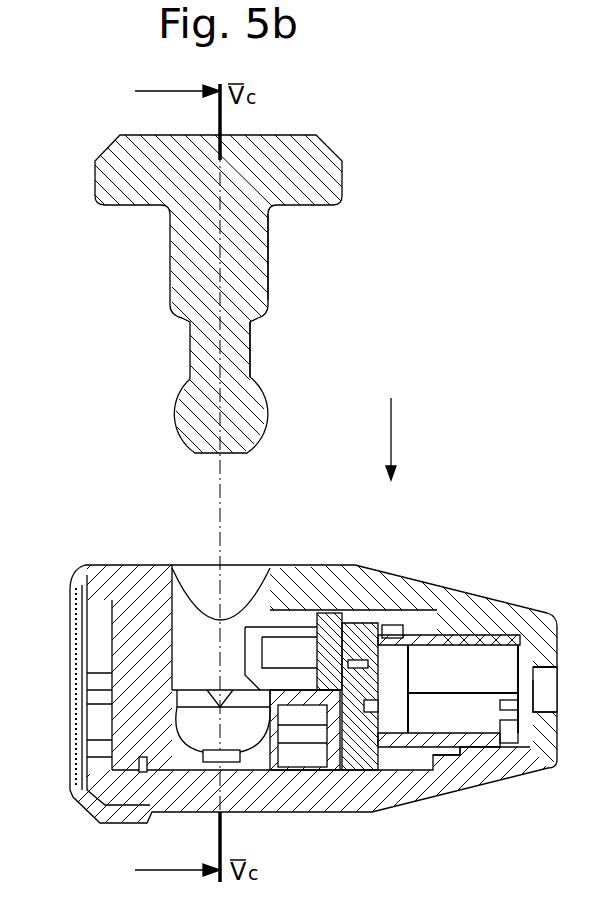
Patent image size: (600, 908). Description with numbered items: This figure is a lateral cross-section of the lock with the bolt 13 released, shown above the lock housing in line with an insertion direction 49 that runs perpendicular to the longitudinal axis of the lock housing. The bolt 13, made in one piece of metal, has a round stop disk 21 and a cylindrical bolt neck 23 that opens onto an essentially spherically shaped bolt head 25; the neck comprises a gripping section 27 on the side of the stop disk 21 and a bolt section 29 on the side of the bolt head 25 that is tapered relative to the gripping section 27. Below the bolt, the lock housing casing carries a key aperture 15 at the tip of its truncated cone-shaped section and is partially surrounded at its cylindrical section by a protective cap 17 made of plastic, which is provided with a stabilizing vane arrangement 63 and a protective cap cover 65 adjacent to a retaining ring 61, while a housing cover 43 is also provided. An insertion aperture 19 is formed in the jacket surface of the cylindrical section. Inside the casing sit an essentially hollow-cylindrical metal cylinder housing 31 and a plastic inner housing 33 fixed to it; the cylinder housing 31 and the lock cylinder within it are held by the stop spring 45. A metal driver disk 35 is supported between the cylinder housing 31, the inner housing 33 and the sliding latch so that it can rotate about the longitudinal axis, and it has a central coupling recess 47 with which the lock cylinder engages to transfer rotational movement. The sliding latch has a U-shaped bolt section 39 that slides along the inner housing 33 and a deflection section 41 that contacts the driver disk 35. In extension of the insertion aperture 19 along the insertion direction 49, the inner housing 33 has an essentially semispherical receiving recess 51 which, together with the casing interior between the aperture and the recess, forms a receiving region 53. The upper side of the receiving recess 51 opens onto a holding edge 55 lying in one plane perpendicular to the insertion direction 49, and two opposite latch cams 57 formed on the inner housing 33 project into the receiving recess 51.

The bolt 13 is at (242, 280).
The stop disk 21 is at (320, 172).
The bolt neck 23 is at (151, 207).
The bolt head 25 is at (192, 422).
The gripping section 27 is at (293, 207).
The bolt section 29 is at (293, 310).
The insertion direction 49 is at (391, 410).
The protective cap 17 is at (86, 568).
The protective cap cover 65 is at (78, 631).
The stabilizing vane arrangement 63 is at (95, 672).
The housing cover 43 is at (125, 727).
The retaining ring 61 is at (135, 762).
The insertion aperture 19 is at (230, 593).
The holding edge 55 is at (178, 686).
The receiving region 53 is at (232, 636).
The bolt section 39 is at (303, 640).
The driver disk 35 is at (360, 632).
The deflection section 41 is at (398, 615).
The receiving recess 51 is at (197, 733).
The latch cams 57 is at (233, 700).
The inner housing 33 is at (335, 750).
The coupling recess 47 is at (374, 690).
The cylinder housing 31 is at (423, 755).
The stop spring 45 is at (510, 730).
The key aperture 15 is at (542, 703).